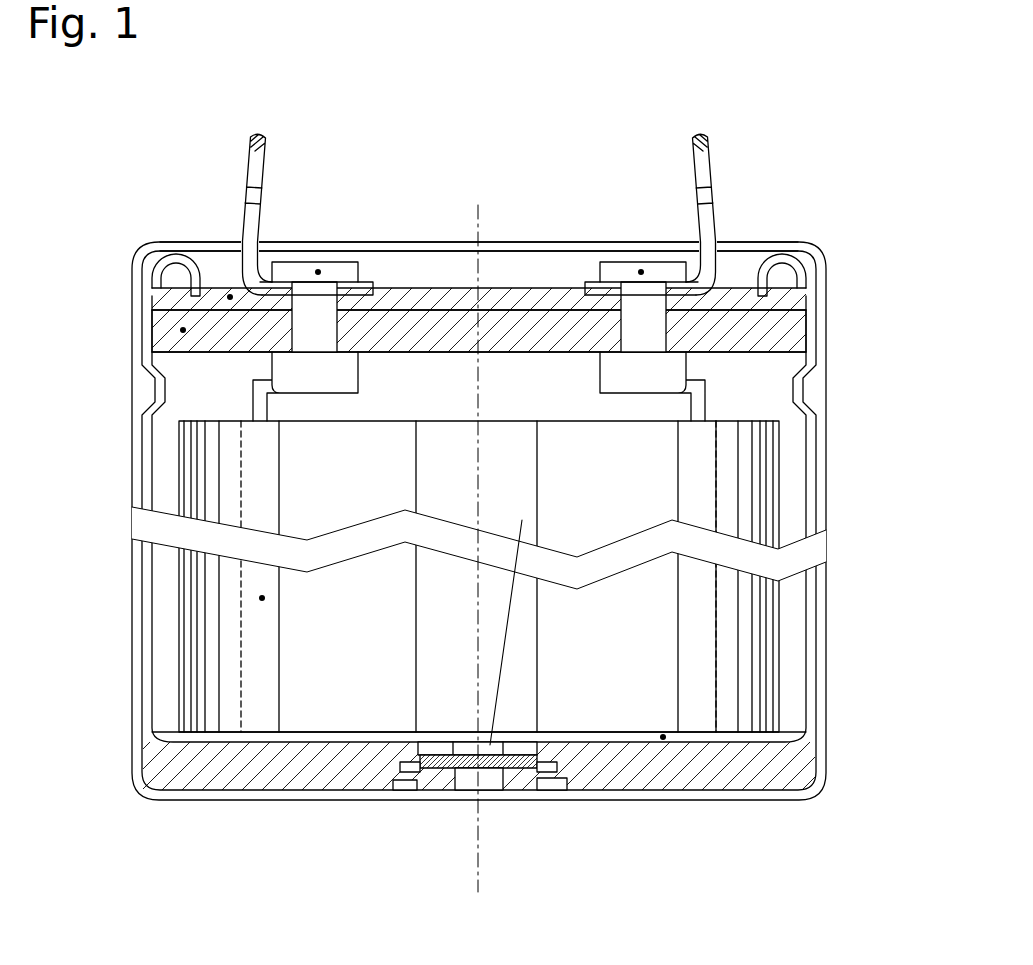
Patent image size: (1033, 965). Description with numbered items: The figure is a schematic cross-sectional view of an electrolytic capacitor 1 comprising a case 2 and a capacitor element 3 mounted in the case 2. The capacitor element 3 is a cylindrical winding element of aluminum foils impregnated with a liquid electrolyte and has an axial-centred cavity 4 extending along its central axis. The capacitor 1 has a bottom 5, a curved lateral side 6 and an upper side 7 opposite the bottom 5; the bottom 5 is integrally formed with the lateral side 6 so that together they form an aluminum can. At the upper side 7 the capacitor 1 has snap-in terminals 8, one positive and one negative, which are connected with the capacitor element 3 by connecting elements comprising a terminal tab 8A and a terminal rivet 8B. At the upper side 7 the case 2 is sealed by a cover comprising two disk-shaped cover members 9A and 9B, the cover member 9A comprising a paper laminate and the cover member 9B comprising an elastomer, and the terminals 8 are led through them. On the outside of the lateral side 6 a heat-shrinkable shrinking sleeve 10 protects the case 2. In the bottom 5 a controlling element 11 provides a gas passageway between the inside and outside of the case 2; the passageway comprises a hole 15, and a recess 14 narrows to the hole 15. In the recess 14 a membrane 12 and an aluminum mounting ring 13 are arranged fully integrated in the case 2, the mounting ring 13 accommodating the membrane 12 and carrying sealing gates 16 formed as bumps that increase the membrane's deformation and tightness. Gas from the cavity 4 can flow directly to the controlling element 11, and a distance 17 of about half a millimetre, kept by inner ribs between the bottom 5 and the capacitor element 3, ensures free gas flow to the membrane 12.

The electrolytic capacitor 1 is at (473, 506).
The case 2 is at (152, 720).
The capacitor element 3 is at (262, 598).
The axial-centred cavity 4 is at (496, 465).
The bottom 5 is at (720, 810).
The curved lateral side 6 is at (838, 366).
The upper side 7 is at (405, 225).
The terminals 8 is at (700, 136).
The terminal tab 8A is at (707, 395).
The terminal rivet 8B is at (641, 272).
The cover member 9A is at (183, 330).
The cover member 9B is at (230, 297).
The shrinking sleeve 10 is at (135, 768).
The controlling element 11 is at (473, 534).
The membrane 12 is at (422, 755).
The mounting ring 13 is at (397, 778).
The recess 14 is at (407, 787).
The hole 15 is at (490, 745).
The sealing gates 16 is at (495, 800).
The distance 17 is at (663, 740).